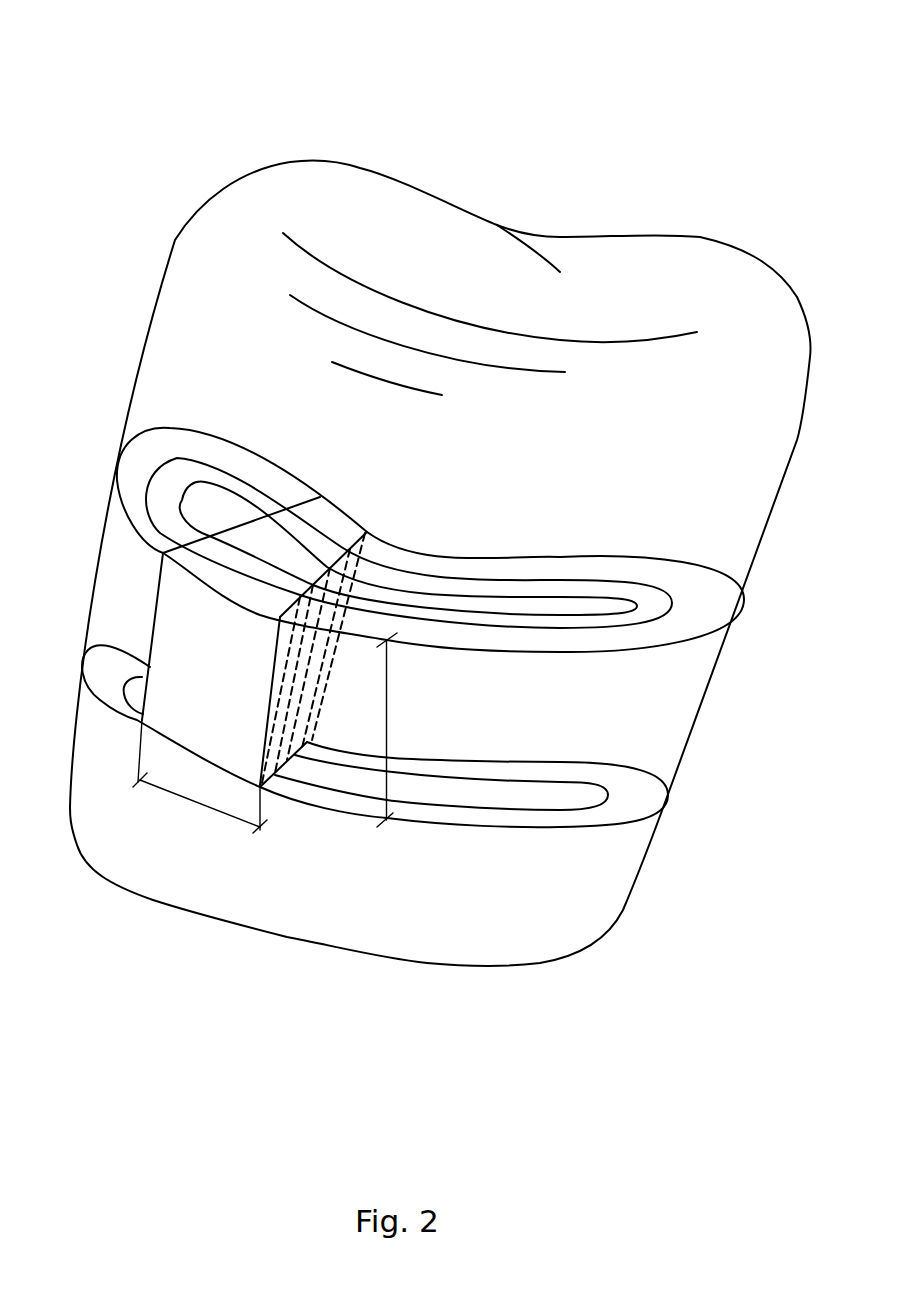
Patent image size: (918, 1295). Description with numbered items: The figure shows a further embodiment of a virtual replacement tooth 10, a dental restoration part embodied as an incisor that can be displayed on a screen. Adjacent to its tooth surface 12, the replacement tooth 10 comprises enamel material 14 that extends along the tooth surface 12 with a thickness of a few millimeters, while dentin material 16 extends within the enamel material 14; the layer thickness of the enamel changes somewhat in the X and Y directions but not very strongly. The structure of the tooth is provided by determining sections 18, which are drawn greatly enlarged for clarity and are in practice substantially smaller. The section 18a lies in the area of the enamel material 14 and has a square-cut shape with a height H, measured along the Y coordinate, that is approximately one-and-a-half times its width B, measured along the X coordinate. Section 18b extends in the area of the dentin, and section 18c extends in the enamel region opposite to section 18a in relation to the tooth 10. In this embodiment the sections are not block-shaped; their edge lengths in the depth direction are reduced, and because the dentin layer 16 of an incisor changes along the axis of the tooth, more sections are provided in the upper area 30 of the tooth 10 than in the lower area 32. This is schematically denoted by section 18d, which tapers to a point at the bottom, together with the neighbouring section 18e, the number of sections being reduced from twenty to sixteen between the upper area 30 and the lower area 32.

The replacement tooth 10 is at (440, 483).
The tooth surface 12 is at (682, 461).
The enamel material 14 is at (723, 598).
The dentin material 16 is at (583, 605).
The sections 18 is at (210, 609).
The section 18a is at (213, 573).
The section 18b is at (163, 555).
The section 18c is at (338, 532).
The section 18d is at (285, 553).
The fifth profile surface 18e is at (303, 540).
The upper area 30 is at (414, 540).
The lower area 32 is at (704, 798).
The height H is at (387, 718).
The width B is at (193, 803).